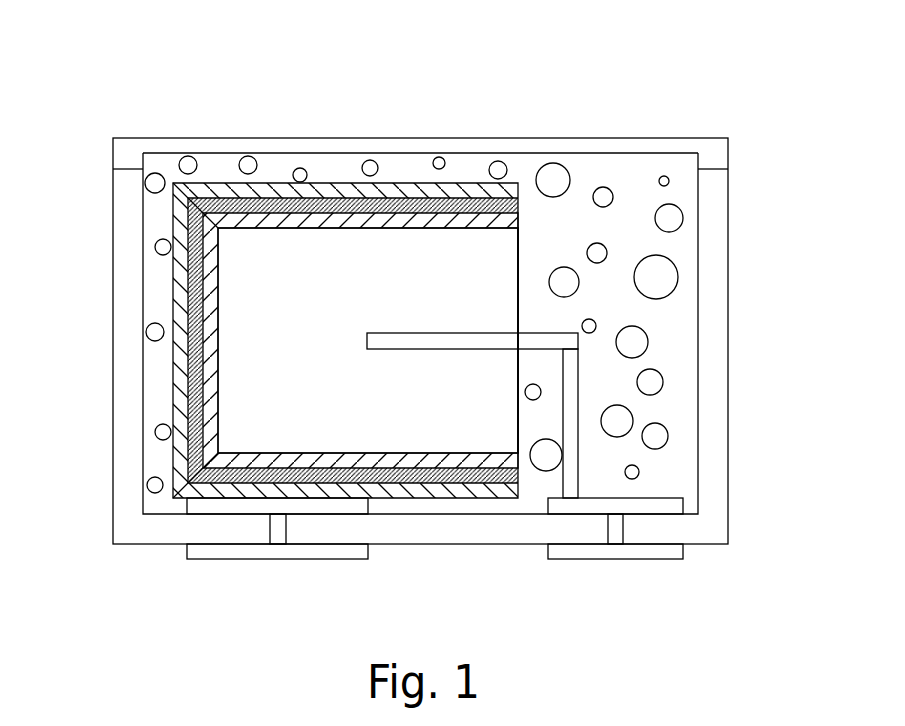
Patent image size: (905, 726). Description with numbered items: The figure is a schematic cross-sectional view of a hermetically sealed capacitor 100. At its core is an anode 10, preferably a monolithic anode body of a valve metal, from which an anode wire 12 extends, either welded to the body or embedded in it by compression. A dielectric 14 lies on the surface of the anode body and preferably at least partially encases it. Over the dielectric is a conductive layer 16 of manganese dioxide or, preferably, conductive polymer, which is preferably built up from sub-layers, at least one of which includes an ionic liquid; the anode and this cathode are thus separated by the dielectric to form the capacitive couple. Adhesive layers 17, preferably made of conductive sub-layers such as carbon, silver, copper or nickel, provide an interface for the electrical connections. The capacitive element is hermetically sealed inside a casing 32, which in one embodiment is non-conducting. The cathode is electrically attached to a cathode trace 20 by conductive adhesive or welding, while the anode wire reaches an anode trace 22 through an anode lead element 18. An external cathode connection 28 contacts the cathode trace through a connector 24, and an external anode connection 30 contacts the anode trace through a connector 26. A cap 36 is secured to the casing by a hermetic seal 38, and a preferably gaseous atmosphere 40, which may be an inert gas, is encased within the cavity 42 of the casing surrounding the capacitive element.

The hermetically sealed capacitor 100 is at (682, 122).
The anode 10 is at (270, 302).
The anode wire 12 is at (428, 338).
The dielectric 14 is at (346, 222).
The conductive layer 16 is at (279, 205).
The adhesive layers 17 is at (221, 192).
The anode lead element 18 is at (571, 420).
The cathode trace 20 is at (204, 505).
The anode trace 22 is at (562, 507).
The connector 24 is at (278, 530).
The connector 26 is at (614, 528).
The external cathode connection 28 is at (327, 552).
The external anode connection 30 is at (652, 550).
The casing 32 is at (711, 336).
The cap 36 is at (598, 148).
The hermetic seal 38 is at (121, 162).
The gaseous atmosphere 40 is at (551, 176).
The cavity 42 is at (673, 246).